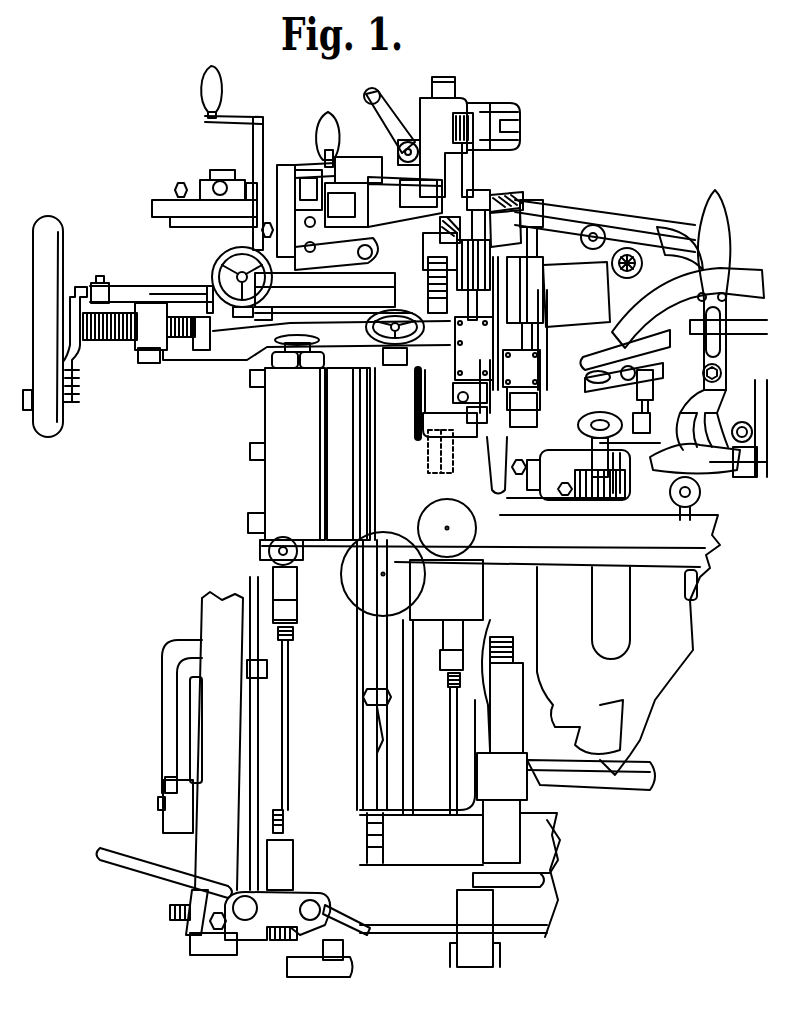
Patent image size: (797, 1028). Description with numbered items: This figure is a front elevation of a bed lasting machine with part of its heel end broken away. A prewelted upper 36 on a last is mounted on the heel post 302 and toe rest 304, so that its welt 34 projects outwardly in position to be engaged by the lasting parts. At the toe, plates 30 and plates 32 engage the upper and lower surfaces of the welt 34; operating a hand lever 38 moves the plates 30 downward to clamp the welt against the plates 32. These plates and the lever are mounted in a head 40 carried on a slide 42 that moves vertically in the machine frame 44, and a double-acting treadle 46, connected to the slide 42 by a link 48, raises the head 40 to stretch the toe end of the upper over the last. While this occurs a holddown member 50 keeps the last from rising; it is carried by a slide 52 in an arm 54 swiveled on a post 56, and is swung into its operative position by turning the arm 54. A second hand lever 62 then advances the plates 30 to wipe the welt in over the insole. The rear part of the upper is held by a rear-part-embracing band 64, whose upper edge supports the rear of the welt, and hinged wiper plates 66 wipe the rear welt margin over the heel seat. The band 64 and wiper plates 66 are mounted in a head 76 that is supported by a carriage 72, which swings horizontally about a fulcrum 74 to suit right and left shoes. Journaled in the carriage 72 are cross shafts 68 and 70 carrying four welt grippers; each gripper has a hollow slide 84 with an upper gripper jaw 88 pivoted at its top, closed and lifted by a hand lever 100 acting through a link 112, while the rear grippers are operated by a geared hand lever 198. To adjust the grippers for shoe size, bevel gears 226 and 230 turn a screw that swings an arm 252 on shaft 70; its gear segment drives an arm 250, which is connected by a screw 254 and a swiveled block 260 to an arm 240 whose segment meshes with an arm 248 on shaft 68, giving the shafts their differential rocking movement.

The plates 30 is at (450, 195).
The plates 32 is at (471, 196).
The welt 34 is at (512, 202).
The upper 36 is at (505, 227).
The hand lever 38 is at (381, 114).
The head 40 is at (427, 266).
The slide 42 is at (366, 376).
The machine frame 44 is at (311, 447).
The double-acting treadle 46 is at (117, 856).
The link 48 is at (285, 710).
The holddown member 50 is at (463, 153).
The slide 52 is at (518, 127).
The arm 54 is at (511, 108).
The post 56 is at (452, 84).
The hand lever 62 is at (235, 182).
The rear-part-embracing band 64 is at (581, 224).
The hinged wiper plates 66 is at (614, 223).
The cross shaft 68 is at (414, 416).
The cross shaft 70 is at (500, 472).
The carriage 72 is at (709, 482).
The fulcrum 74 is at (428, 458).
The head 76 is at (661, 227).
The hollow slide 84 is at (541, 209).
The upper gripper jaw 88 is at (488, 197).
The hand lever 100 is at (470, 454).
The link 112 is at (445, 294).
The hand lever 198 is at (412, 386).
The bevel gear 226 is at (620, 500).
The bevel gear 230 is at (600, 500).
The arm 240 is at (593, 360).
The arm 248 is at (488, 456).
The arm 250 is at (738, 428).
The arm 252 is at (528, 486).
The screw 254 is at (656, 404).
The block 260 is at (626, 477).
The heel post 302 is at (578, 333).
The toe rest 304 is at (430, 252).